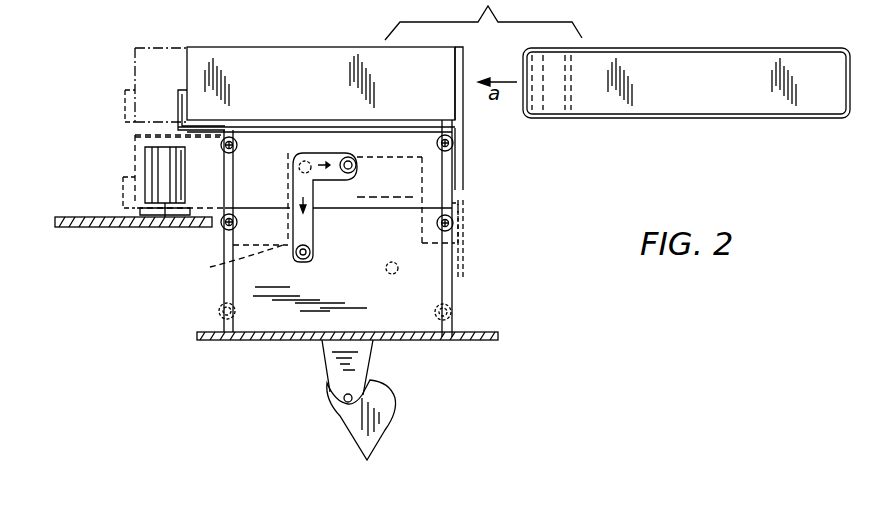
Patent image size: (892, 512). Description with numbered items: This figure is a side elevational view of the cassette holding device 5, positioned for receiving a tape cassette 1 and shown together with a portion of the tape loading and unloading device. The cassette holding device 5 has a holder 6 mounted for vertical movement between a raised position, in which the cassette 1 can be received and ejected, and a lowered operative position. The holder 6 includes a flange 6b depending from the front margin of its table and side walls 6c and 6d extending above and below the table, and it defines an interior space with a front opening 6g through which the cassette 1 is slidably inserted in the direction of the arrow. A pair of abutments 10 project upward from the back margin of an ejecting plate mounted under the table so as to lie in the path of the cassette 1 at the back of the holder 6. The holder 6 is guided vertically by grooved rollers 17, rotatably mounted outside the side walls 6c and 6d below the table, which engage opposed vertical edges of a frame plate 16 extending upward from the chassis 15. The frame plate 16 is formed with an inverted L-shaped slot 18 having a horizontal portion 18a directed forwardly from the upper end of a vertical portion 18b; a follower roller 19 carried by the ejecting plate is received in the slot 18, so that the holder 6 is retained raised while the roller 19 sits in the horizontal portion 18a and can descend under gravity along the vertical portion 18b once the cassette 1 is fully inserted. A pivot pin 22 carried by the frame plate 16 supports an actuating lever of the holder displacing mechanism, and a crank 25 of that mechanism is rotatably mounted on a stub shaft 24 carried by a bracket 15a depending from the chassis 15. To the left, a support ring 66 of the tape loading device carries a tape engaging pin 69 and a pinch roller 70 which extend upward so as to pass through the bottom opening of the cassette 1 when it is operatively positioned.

The cassette 1 is at (735, 62).
The cassette holding device 5 is at (188, 314).
The holder 6 is at (278, 44).
The flange 6b is at (511, 170).
The side wall 6c is at (205, 290).
The side wall 6d is at (370, 62).
The front opening 6g is at (503, 70).
The abutments 10 is at (181, 101).
The chassis 15 is at (495, 331).
The bracket 15a is at (427, 371).
The frame plate 16 is at (433, 277).
The grooved rollers 17 is at (238, 145).
The inverted L-shaped slot 18 is at (298, 183).
The horizontal slot portion 18a is at (357, 206).
The vertical slot portion 18b is at (375, 239).
The follower roller 19 is at (356, 170).
The pivot pin 22 is at (390, 275).
The stub shaft 24 is at (345, 400).
The crank 25 is at (385, 406).
The support ring 66 is at (83, 228).
The tape engaging pin 69 is at (165, 175).
The pinch roller 70 is at (152, 152).